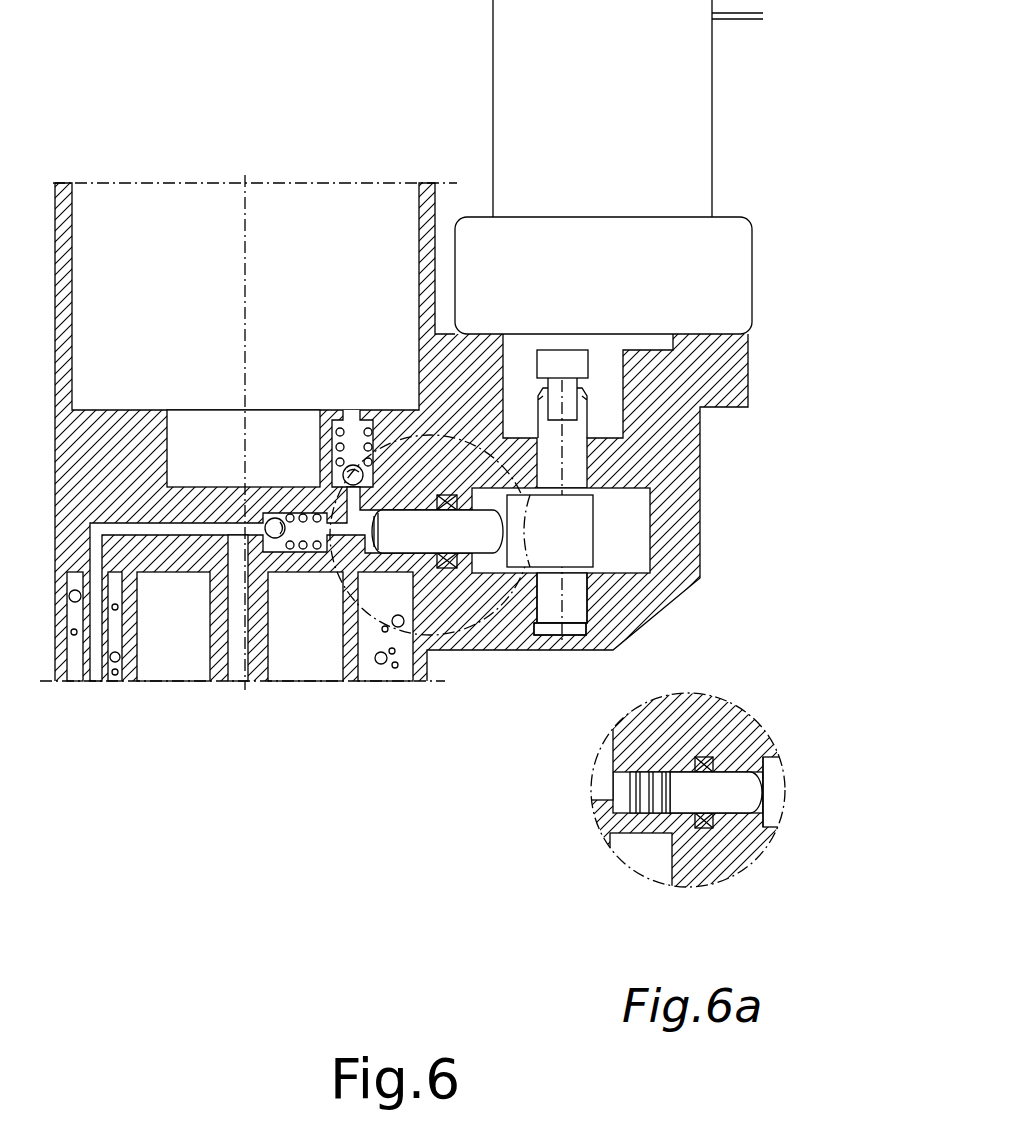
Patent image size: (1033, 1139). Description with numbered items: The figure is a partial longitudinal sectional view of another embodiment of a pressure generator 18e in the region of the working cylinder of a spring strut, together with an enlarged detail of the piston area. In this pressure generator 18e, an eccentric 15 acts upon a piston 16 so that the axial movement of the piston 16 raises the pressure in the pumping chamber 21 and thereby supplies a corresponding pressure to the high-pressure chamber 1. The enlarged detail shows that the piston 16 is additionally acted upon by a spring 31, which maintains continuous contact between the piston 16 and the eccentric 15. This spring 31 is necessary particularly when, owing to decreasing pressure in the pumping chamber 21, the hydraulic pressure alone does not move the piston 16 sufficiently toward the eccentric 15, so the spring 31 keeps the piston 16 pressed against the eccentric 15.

In FIG. 6, the high-pressure chamber 1 is at (148, 250).
In FIG. 6, the pressure generator 18e is at (806, 213).
In FIG. 6, the eccentric 15 is at (580, 530).
In FIG. 6A, the eccentric 15 is at (770, 790).
In FIG. 6, the piston 16 is at (417, 530).
In FIG. 6A, the piston 16 is at (722, 790).
In FIG. 6, the pumping chamber 21 is at (353, 527).
In FIG. 6, the spring 31 is at (374, 567).
In FIG. 6A, the spring 31 is at (643, 817).